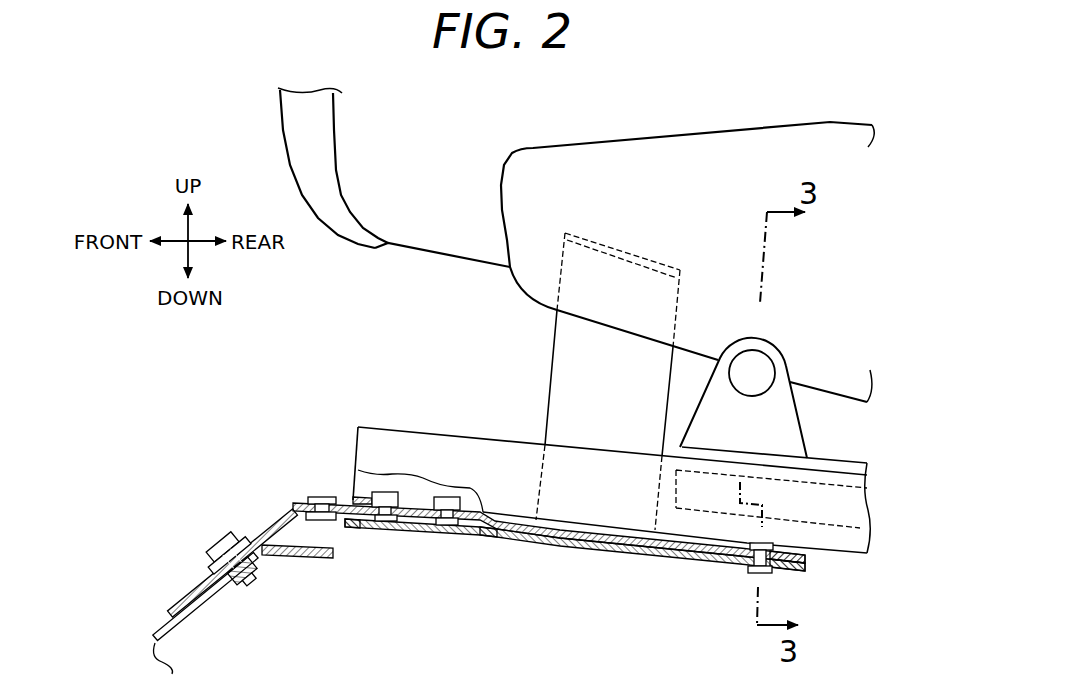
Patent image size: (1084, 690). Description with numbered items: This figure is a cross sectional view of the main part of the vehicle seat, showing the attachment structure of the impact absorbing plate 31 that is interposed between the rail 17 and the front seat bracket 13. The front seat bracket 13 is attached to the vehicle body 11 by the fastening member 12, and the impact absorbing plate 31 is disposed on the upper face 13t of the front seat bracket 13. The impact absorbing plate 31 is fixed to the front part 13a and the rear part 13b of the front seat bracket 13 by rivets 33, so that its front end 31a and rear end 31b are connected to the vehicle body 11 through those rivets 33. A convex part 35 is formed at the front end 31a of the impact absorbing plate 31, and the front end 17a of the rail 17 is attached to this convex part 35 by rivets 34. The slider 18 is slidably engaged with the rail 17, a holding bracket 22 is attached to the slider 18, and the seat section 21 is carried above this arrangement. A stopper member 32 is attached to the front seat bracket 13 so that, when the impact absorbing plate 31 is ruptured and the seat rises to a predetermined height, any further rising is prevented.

The vehicle body 11 is at (177, 630).
The fastening member 12 is at (217, 543).
The front seat bracket 13 is at (523, 502).
The front part of the front seat bracket 13a is at (348, 528).
The rear part of the front seat bracket 13b is at (789, 573).
The upper face of the front seat bracket 13t is at (505, 513).
The rail 17 is at (584, 446).
The front end of the rail 17a is at (400, 470).
The slider 18 is at (867, 470).
The seat section 21 is at (590, 165).
The holding bracket 22 is at (775, 427).
The impact absorbing plate 31 is at (551, 509).
The front end of the impact absorbing plate 31a is at (286, 502).
The rear end of the impact absorbing plate 31b is at (794, 549).
The stopper member 32 is at (575, 371).
The rivet 33 is at (313, 530).
The rivet 34 is at (392, 523).
The convex part 35 is at (353, 502).